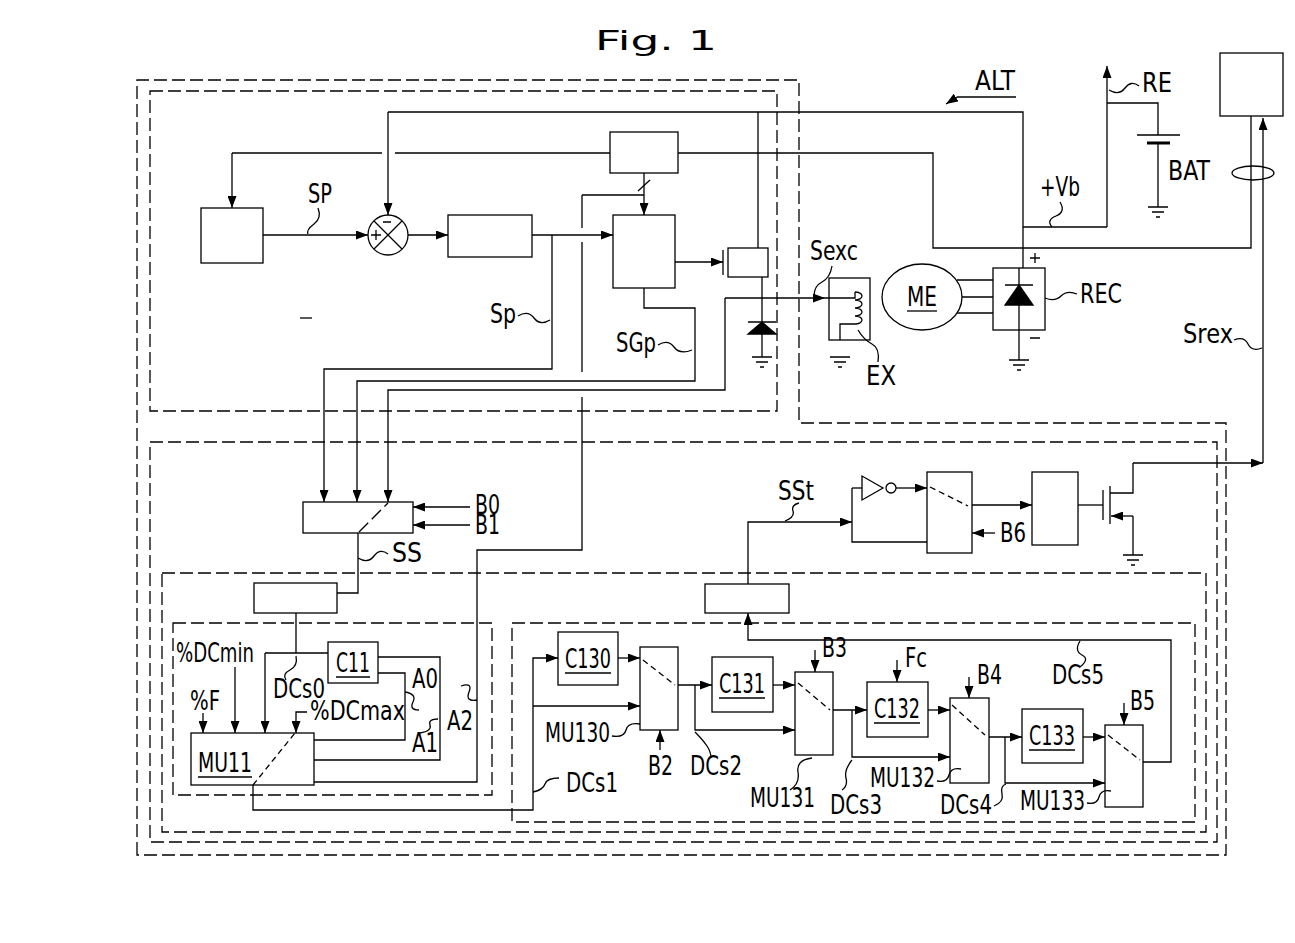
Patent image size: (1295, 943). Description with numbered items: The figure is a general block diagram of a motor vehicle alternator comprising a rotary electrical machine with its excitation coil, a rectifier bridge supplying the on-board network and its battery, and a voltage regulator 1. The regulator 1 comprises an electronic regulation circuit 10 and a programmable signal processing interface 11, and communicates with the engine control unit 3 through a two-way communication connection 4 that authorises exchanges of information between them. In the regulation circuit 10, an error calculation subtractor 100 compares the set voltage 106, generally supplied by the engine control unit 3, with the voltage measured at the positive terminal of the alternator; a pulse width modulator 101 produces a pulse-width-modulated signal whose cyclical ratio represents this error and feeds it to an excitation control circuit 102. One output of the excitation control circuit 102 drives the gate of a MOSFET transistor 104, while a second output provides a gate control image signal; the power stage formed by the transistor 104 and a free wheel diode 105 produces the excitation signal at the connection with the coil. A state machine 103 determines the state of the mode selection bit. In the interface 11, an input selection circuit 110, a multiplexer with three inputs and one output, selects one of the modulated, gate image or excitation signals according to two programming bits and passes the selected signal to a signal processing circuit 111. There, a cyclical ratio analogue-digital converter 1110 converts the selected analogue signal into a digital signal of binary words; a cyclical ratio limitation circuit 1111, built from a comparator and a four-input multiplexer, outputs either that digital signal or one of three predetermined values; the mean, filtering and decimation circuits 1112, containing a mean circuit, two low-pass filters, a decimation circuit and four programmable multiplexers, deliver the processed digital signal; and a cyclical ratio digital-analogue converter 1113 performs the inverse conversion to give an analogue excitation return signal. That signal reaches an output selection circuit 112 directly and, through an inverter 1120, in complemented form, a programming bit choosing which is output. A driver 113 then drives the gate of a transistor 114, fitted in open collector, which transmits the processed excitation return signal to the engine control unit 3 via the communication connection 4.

The voltage regulator 1 is at (799, 97).
The engine control unit 3 is at (1257, 99).
The two-way communication connection 4 is at (1241, 182).
The electronic regulation circuit 10 is at (189, 131).
The programmable signal processing interface 11 is at (186, 482).
The error calculation subtractor 100 is at (388, 253).
The pulse width modulator 101 is at (506, 250).
The excitation control circuit 102 is at (660, 267).
The state machine 103 is at (660, 168).
The MOSFET transistor 104 is at (764, 277).
The free wheel diode 105 is at (744, 322).
The set voltage 106 is at (248, 250).
The input selection circuit 110 is at (348, 533).
The signal processing circuit 111 is at (205, 609).
The output selection circuit 112 is at (965, 543).
The driver 113 is at (1071, 516).
The transistor 114 is at (1134, 505).
The cyclical ratio analogue-digital converter 1110 is at (318, 613).
The cyclical ratio limitation circuit 1111 is at (450, 652).
The mean, filtering and decimation circuits 1112 is at (699, 814).
The cyclical ratio digital-analogue converter 1113 is at (769, 613).
The inverter 1120 is at (879, 478).